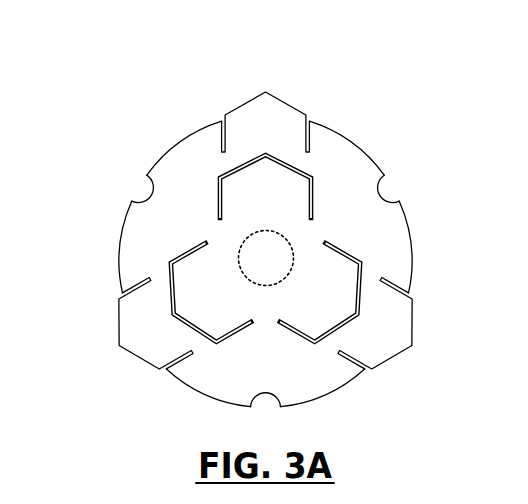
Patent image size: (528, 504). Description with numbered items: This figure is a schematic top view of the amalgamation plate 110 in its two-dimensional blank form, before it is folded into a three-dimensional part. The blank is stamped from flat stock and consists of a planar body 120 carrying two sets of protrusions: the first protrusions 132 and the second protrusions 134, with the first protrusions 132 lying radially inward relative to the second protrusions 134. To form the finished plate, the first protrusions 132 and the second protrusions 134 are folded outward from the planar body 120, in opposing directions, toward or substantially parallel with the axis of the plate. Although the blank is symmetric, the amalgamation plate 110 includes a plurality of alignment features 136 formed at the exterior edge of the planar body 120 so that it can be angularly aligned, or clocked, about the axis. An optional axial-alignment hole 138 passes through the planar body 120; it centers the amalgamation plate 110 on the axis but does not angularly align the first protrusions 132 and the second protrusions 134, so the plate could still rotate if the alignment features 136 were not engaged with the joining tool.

The amalgamation plate 110 is at (413, 109).
The planar body 120 is at (370, 162).
The first protrusions 132 is at (276, 115).
The second protrusions 134 is at (244, 181).
The alignment features 136 is at (148, 191).
The axial-alignment hole 138 is at (265, 286).